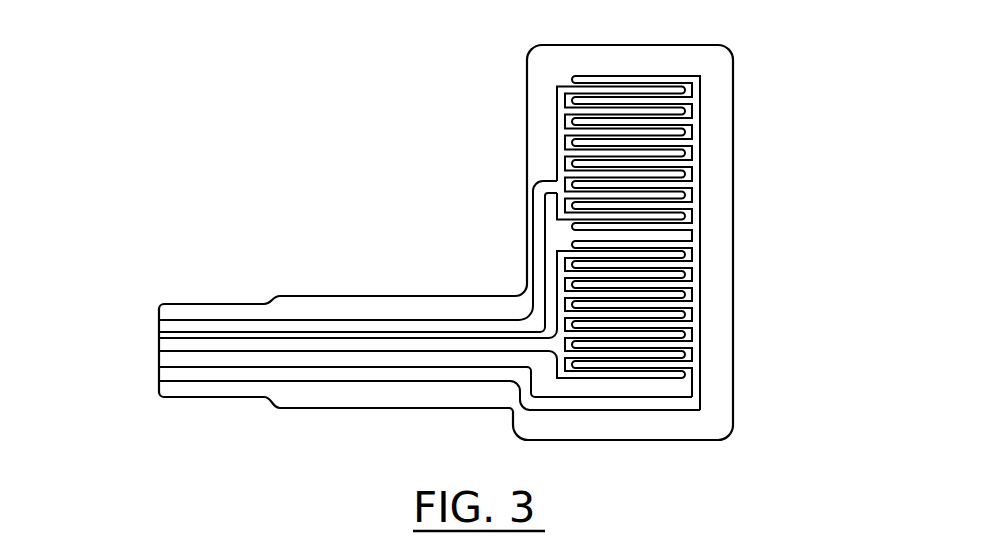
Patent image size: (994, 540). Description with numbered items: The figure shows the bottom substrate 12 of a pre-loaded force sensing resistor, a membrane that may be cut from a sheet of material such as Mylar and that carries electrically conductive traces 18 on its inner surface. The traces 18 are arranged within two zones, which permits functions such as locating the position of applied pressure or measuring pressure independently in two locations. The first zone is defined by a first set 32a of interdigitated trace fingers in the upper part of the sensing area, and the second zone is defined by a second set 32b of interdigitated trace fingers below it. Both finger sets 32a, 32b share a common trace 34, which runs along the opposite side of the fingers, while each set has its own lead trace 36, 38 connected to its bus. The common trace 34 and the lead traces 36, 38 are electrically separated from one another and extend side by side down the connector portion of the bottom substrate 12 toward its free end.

The first substrate 12 is at (401, 102).
The electrically conductive traces 18 is at (708, 70).
The first set of interdigitated trace fingers 32a is at (750, 85).
The second set of interdigitated trace fingers 32b is at (752, 245).
The common trace 34 is at (160, 378).
The lead trace 36 is at (202, 322).
The lead trace 38 is at (160, 340).